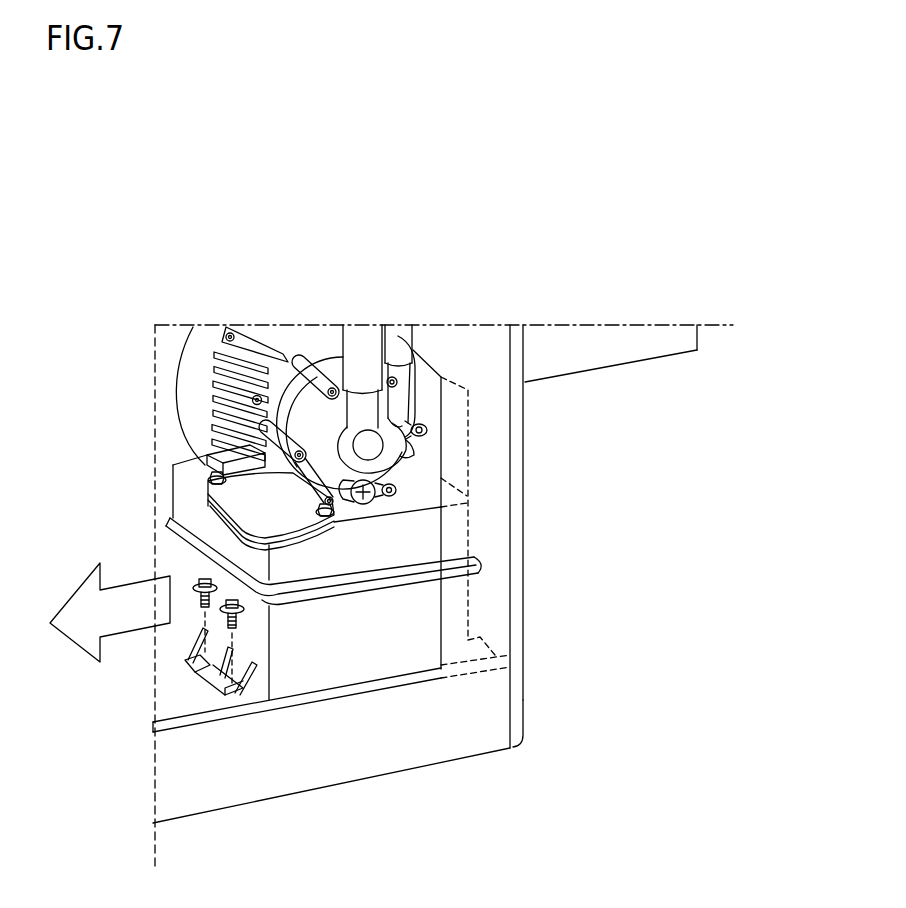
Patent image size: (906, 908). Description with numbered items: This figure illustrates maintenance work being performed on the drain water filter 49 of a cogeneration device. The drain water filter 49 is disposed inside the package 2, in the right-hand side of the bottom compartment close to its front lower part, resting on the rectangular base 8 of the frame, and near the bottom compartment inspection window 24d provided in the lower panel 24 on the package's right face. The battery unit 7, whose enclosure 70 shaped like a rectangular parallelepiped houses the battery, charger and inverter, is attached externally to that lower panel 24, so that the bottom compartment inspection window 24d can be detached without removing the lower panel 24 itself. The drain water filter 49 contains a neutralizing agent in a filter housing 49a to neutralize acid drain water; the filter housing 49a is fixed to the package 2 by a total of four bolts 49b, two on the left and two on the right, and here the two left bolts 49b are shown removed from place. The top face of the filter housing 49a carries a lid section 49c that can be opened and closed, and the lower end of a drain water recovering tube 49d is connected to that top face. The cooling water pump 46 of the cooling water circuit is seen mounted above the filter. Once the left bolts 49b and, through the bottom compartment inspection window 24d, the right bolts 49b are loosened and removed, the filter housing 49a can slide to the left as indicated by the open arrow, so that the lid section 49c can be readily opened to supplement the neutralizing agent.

The battery unit 7 is at (702, 340).
The enclosure 70 is at (645, 348).
The lower panel 24 is at (525, 572).
The package 2 is at (523, 703).
The rectangular base 8 is at (217, 787).
The drain water filter 49 is at (318, 677).
The filter housing 49a is at (387, 637).
The bolts 49b is at (200, 608).
The lid section 49c is at (262, 500).
The drain water recovering tube 49d is at (410, 452).
The cooling water pump 46 is at (287, 340).
The bottom compartment inspection window 24d is at (427, 377).